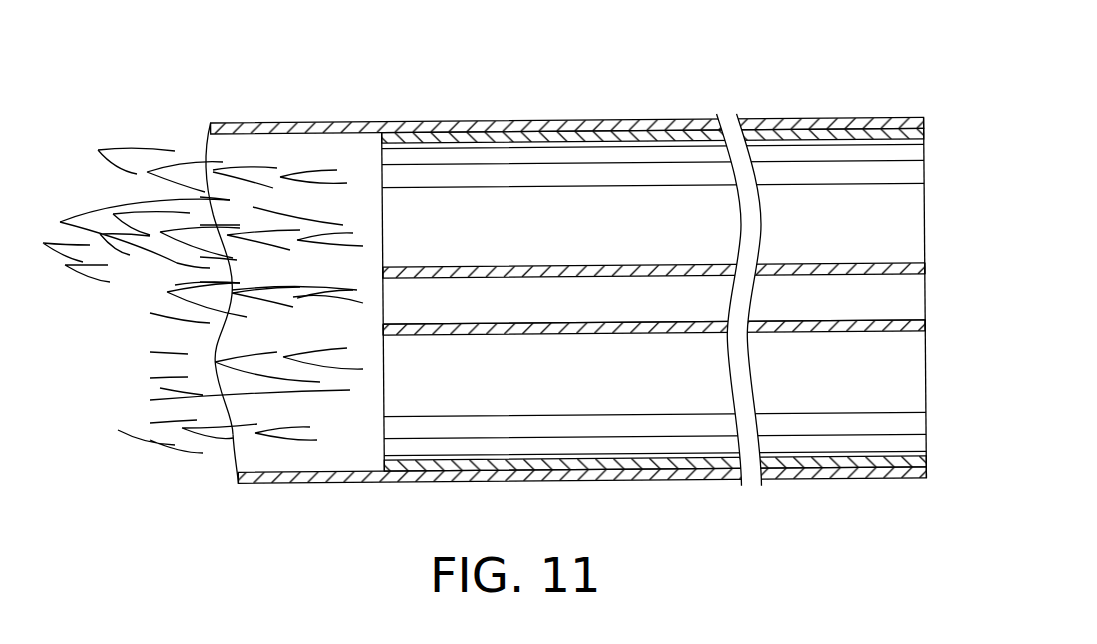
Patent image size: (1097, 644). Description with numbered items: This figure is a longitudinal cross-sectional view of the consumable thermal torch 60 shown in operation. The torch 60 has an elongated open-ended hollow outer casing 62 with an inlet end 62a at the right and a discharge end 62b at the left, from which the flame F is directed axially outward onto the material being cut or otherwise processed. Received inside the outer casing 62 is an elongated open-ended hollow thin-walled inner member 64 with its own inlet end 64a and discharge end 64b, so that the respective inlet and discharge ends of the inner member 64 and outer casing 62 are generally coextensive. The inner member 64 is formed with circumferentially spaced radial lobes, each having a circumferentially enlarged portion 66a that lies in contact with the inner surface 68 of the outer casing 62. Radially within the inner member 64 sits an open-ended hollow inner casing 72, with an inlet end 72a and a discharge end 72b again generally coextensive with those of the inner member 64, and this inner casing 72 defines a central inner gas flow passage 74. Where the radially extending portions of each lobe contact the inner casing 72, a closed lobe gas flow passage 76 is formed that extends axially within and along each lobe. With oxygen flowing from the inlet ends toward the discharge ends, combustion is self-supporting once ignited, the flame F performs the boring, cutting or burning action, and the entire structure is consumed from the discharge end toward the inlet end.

The consumable thermal torch 60 is at (765, 92).
The outer casing 62 is at (412, 122).
The inlet end of outer casing 62a is at (926, 119).
The discharge end of outer casing 62b is at (210, 127).
The inner member 64 is at (452, 462).
The inlet end of inner member 64a is at (928, 482).
The discharge end of inner member 64b is at (357, 485).
The circumferentially enlarged portion 66a is at (600, 122).
The inner surface of outer casing 68 is at (312, 135).
The inner casing 72 is at (513, 266).
The inlet end of inner casing 72a is at (925, 335).
The discharge end of inner casing 72b is at (385, 334).
The inner gas flow passage 74 is at (610, 298).
The closed lobe gas flow passage 76 is at (503, 172).
The flame F is at (133, 152).